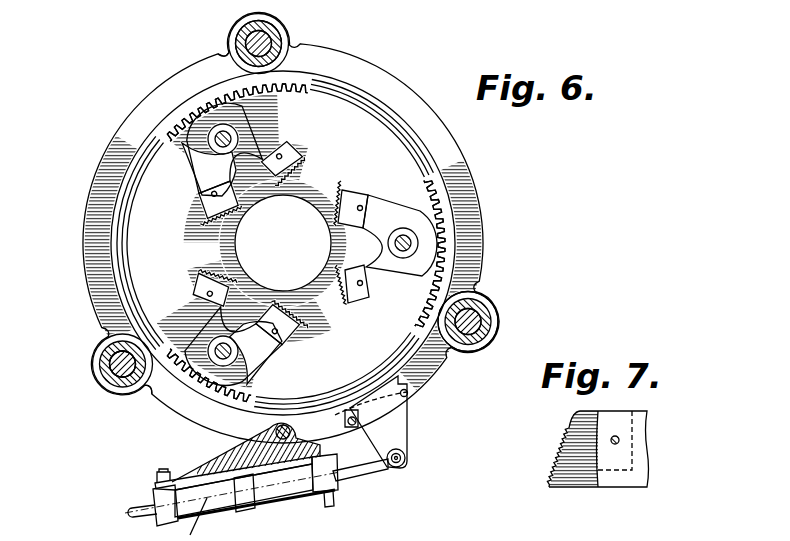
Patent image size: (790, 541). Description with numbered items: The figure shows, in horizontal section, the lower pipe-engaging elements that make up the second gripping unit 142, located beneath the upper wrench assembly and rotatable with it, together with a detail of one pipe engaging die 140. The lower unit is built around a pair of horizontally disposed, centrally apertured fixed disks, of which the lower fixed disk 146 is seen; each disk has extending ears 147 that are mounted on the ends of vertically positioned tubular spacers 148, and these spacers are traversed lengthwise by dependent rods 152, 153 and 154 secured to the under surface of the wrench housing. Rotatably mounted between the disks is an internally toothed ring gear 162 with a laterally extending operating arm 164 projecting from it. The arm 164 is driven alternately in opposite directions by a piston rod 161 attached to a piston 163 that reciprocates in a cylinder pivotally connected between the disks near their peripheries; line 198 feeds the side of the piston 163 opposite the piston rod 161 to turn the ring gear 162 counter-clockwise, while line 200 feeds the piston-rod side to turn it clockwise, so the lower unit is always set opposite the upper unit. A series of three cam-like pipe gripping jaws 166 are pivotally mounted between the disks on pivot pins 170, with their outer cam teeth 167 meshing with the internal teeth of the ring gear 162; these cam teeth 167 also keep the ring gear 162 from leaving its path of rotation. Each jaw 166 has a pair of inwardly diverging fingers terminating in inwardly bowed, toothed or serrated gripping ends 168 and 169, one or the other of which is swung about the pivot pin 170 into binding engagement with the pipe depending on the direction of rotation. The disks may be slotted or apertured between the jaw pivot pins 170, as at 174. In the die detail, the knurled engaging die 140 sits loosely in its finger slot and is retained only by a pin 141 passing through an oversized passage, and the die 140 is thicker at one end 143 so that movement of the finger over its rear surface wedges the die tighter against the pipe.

In FIG. 7, the engaging die 140 is at (557, 455).
In FIG. 7, the pin 141 is at (620, 441).
In FIG. 6, the second gripping unit 142 is at (472, 160).
In FIG. 7, the thicker end of die 143 is at (550, 485).
In FIG. 6, the fixed disk 146 is at (84, 228).
In FIG. 6, the extending ear 147 is at (236, 57).
In FIG. 6, the tubular spacer 148 is at (284, 36).
In FIG. 6, the dependent rod 152 is at (115, 370).
In FIG. 6, the dependent rod 153 is at (246, 41).
In FIG. 6, the dependent rod 154 is at (482, 305).
In FIG. 6, the piston rod 161 is at (372, 471).
In FIG. 6, the ring gear 162 is at (438, 207).
In FIG. 6, the piston 163 is at (236, 494).
In FIG. 6, the operating arm 164 is at (395, 421).
In FIG. 6, the pipe gripping jaw 166 is at (270, 148).
In FIG. 6, the outer cam teeth 167 is at (178, 133).
In FIG. 6, the gripping end 168 is at (306, 163).
In FIG. 6, the gripping end 169 is at (348, 186).
In FIG. 6, the pivot pin 170 is at (223, 139).
In FIG. 6, the slot 174 is at (384, 120).
In FIG. 6, the line 198 is at (143, 506).
In FIG. 6, the line 200 is at (325, 503).